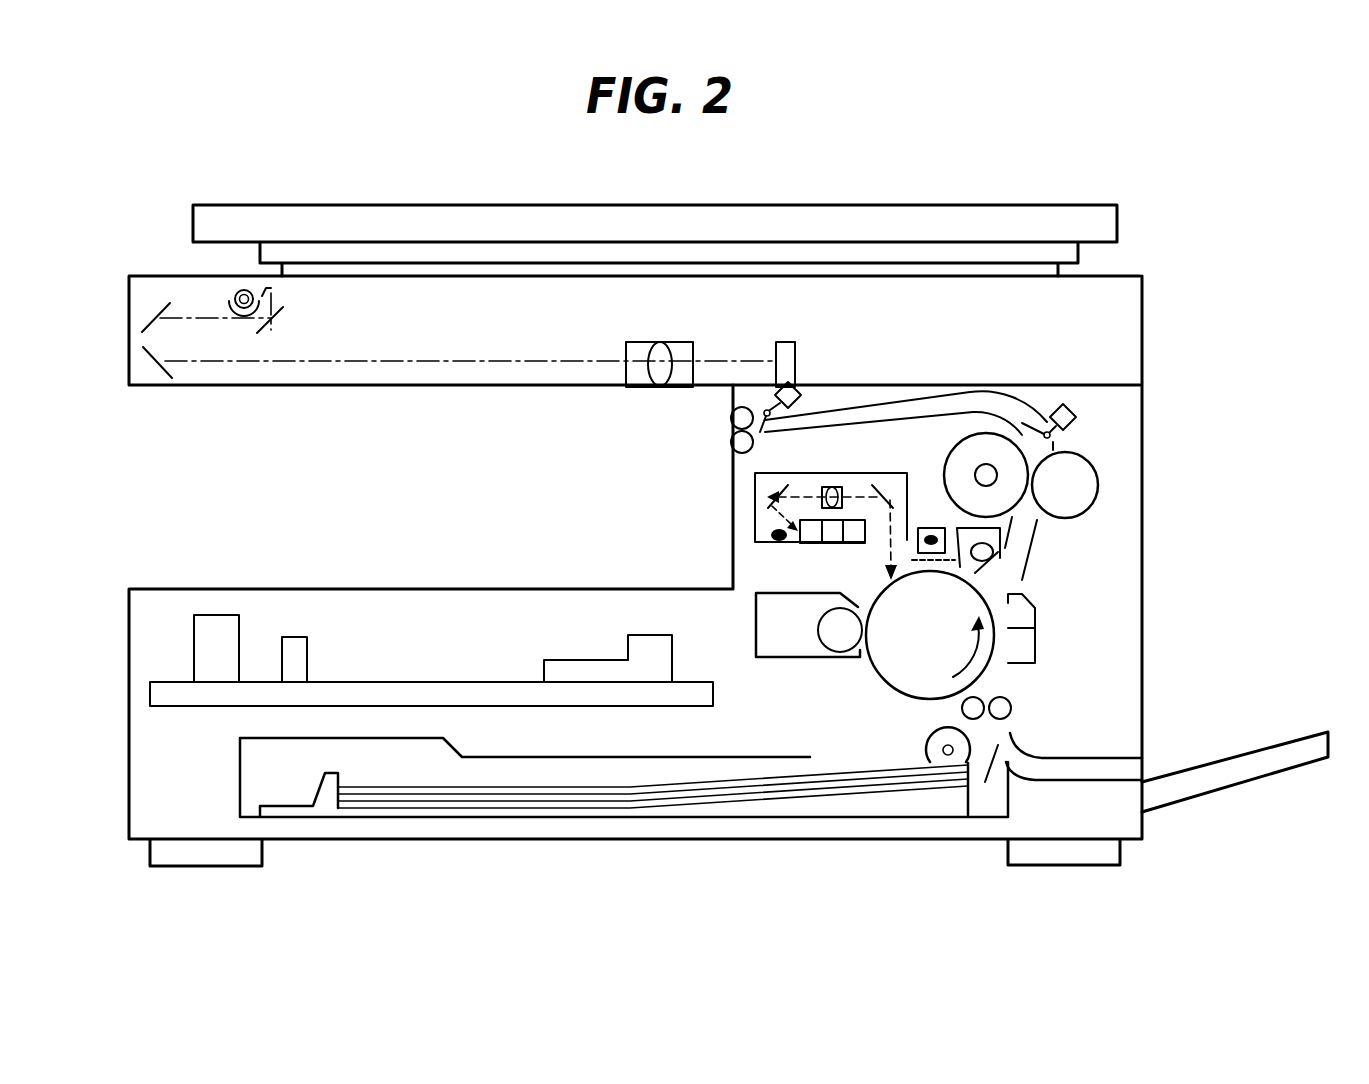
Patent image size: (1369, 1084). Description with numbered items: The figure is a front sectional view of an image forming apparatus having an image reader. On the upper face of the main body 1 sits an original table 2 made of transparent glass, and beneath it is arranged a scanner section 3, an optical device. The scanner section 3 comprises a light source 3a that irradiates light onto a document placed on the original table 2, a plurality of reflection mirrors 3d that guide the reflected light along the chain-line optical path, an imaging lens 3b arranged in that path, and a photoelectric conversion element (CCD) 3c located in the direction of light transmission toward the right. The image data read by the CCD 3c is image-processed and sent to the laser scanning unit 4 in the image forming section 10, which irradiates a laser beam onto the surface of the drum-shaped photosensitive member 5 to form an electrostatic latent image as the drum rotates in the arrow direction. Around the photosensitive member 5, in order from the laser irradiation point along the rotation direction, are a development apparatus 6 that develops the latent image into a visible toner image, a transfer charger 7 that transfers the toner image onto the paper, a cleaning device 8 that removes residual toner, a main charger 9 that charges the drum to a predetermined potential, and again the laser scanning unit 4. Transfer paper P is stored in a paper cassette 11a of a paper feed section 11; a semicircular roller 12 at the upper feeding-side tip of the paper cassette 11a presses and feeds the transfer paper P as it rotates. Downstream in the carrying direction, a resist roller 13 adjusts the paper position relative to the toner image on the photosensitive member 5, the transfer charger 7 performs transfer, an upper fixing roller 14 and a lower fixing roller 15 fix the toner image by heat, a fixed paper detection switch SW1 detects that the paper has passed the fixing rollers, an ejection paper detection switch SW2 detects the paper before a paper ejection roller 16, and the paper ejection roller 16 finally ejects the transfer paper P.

The main body 1 is at (1205, 650).
The original table 2 is at (836, 275).
The scanner section 3 is at (1152, 360).
The light source 3a is at (243, 289).
The imaging lens 3b is at (676, 342).
The photoelectric conversion element (CCD) 3c is at (797, 350).
The reflection mirrors 3d is at (158, 312).
The laser scanning unit (LSU) 4 is at (882, 474).
The photosensitive member 5 is at (888, 683).
The development apparatus 6 is at (794, 659).
The transfer charger 7 is at (1037, 640).
The cleaning device 8 is at (1006, 572).
The main charger 9 is at (931, 527).
The image forming section 10 is at (1150, 588).
The paper feed section 11 is at (1213, 792).
The paper cassette 11a is at (822, 818).
The semicircular roller 12 is at (935, 758).
The resist roller 13 is at (1012, 708).
The upper fixing roller 14 is at (983, 430).
The lower fixing roller 15 is at (1098, 485).
The paper ejection roller 16 is at (731, 446).
The transfer paper P is at (683, 783).
The fixed paper detection switch SW1 is at (1078, 417).
The ejection paper detection switch SW2 is at (764, 411).